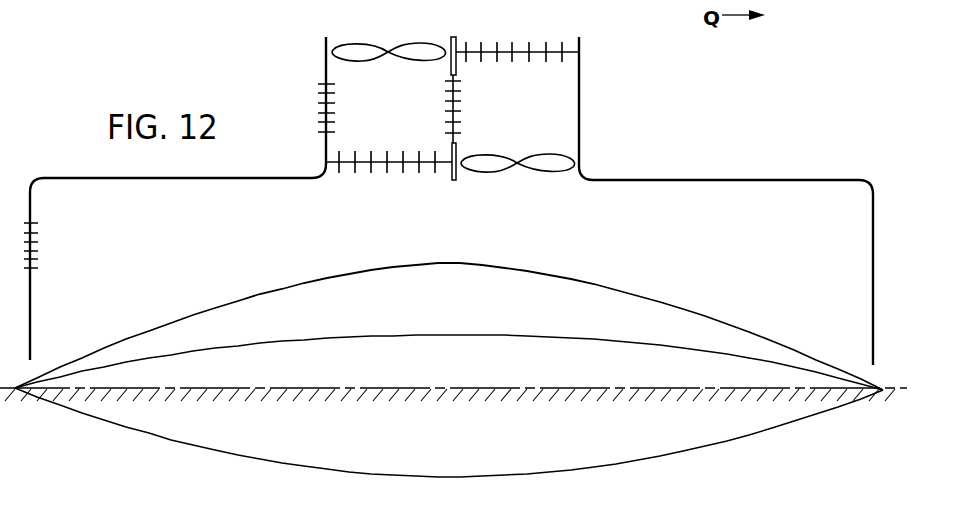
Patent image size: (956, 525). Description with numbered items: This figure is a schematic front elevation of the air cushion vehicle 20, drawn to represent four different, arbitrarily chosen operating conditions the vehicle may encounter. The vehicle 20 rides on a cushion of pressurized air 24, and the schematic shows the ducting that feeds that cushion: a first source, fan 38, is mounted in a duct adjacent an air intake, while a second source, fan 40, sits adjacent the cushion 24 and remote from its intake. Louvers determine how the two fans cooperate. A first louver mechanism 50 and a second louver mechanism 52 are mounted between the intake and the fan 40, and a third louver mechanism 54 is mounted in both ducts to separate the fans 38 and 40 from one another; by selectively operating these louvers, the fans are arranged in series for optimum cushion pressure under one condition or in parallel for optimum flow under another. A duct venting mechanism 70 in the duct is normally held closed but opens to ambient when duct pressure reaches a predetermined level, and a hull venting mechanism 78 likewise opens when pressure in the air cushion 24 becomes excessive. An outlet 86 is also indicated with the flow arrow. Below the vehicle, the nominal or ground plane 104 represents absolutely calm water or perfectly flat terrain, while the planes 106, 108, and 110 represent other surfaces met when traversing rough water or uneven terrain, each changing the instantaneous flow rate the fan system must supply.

The air cushion vehicle 20 is at (669, 152).
The cushion of pressurized air 24 is at (457, 226).
The fan 38 is at (407, 50).
The fan 40 is at (543, 164).
The first louver mechanism 50 is at (386, 167).
The second louver mechanism 52 is at (512, 58).
The third louver mechanism 54 is at (460, 110).
The duct venting mechanism 70 is at (322, 112).
The hull venting mechanism 78 is at (40, 250).
The outlet duct 86 is at (616, 0).
The nominal or ground plane 104 is at (460, 388).
The plane 106 is at (416, 477).
The plane 108 is at (481, 335).
The plane 110 is at (632, 290).